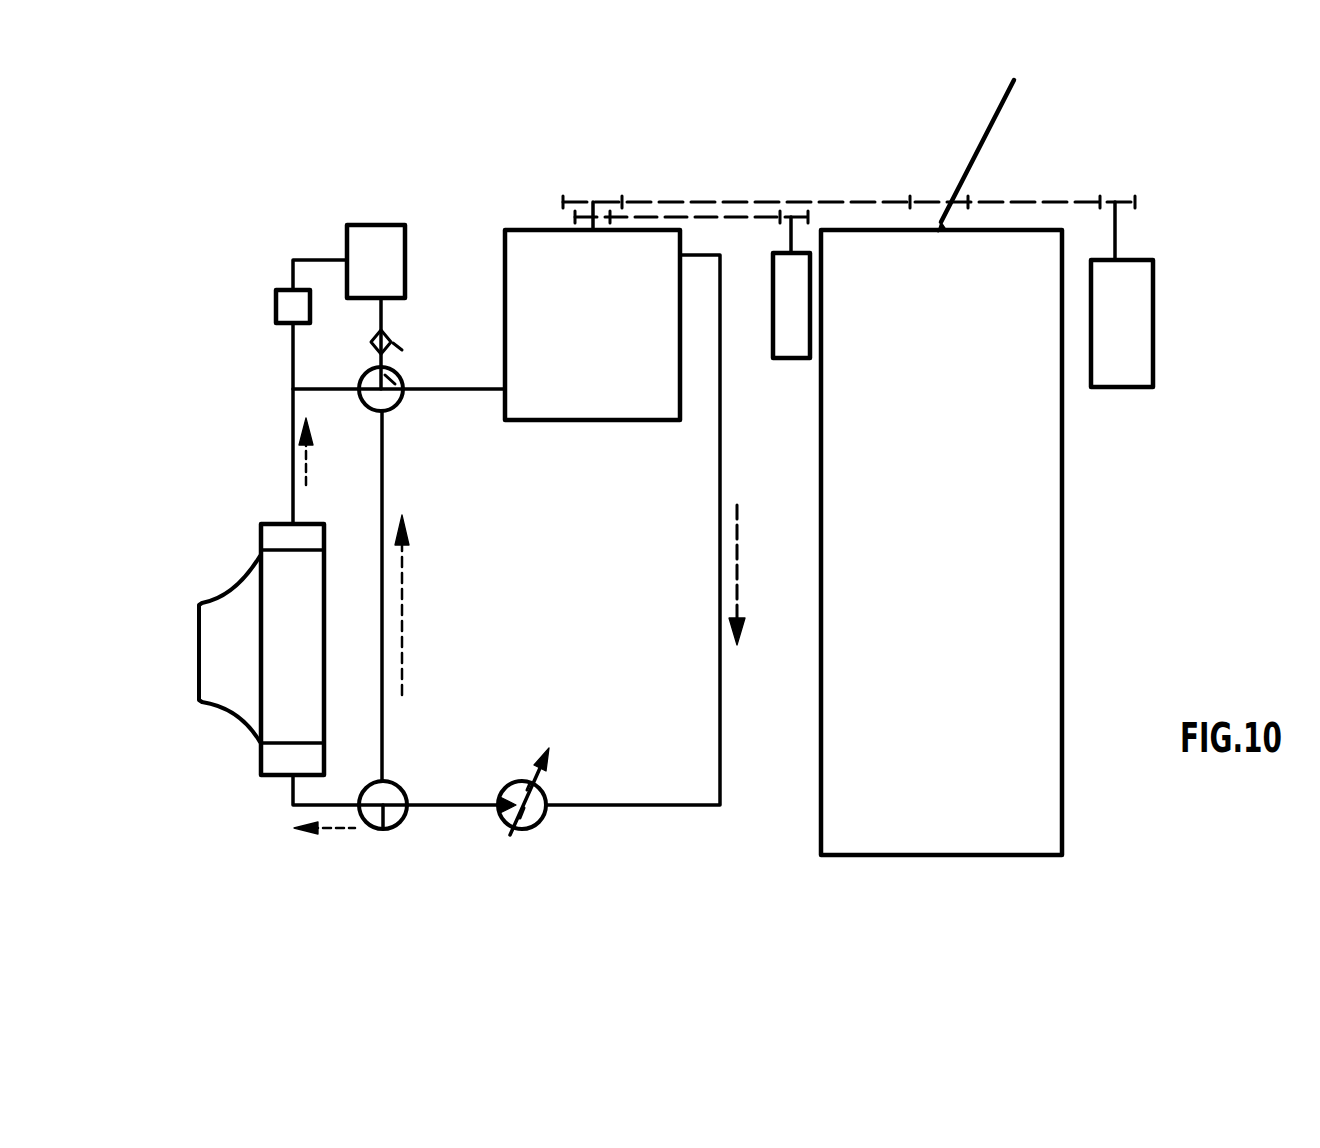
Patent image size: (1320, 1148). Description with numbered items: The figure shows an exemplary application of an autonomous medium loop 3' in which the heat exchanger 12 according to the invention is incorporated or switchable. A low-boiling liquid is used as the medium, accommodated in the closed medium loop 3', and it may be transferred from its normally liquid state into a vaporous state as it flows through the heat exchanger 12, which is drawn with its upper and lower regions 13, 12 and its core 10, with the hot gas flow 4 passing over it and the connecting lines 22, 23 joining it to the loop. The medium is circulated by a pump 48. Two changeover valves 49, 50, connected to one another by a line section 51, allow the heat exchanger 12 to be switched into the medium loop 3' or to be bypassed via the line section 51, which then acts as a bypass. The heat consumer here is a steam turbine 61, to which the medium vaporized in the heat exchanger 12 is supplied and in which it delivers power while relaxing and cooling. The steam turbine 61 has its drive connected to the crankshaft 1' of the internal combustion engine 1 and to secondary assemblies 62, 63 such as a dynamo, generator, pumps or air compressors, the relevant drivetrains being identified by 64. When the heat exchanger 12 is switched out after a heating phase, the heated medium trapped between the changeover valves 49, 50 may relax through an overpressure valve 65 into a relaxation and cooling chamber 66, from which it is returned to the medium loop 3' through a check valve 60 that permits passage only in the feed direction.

The internal combustion engine 1 is at (941, 542).
The crankshaft 1' is at (976, 139).
The autonomous medium loop 3' is at (645, 577).
The cooling air flow 4 is at (208, 588).
The cell / heat exchanger 10 is at (302, 655).
The heat exchanger 12 is at (258, 764).
The upper header 13 is at (272, 537).
The inlet line 22 is at (283, 797).
The outlet line 23 is at (292, 440).
The pump 48 is at (548, 823).
The changeover valve 49 is at (405, 827).
The changeover valve 50 is at (403, 398).
The line section 51 is at (383, 738).
The check valve 60 is at (394, 346).
The steam turbine 61 is at (600, 333).
The secondary assembly 62 is at (790, 360).
The secondary assembly 63 is at (1131, 360).
The drivetrain 64 is at (788, 215).
The overpressure valve 65 is at (280, 310).
The relaxation and cooling chamber 66 is at (378, 240).